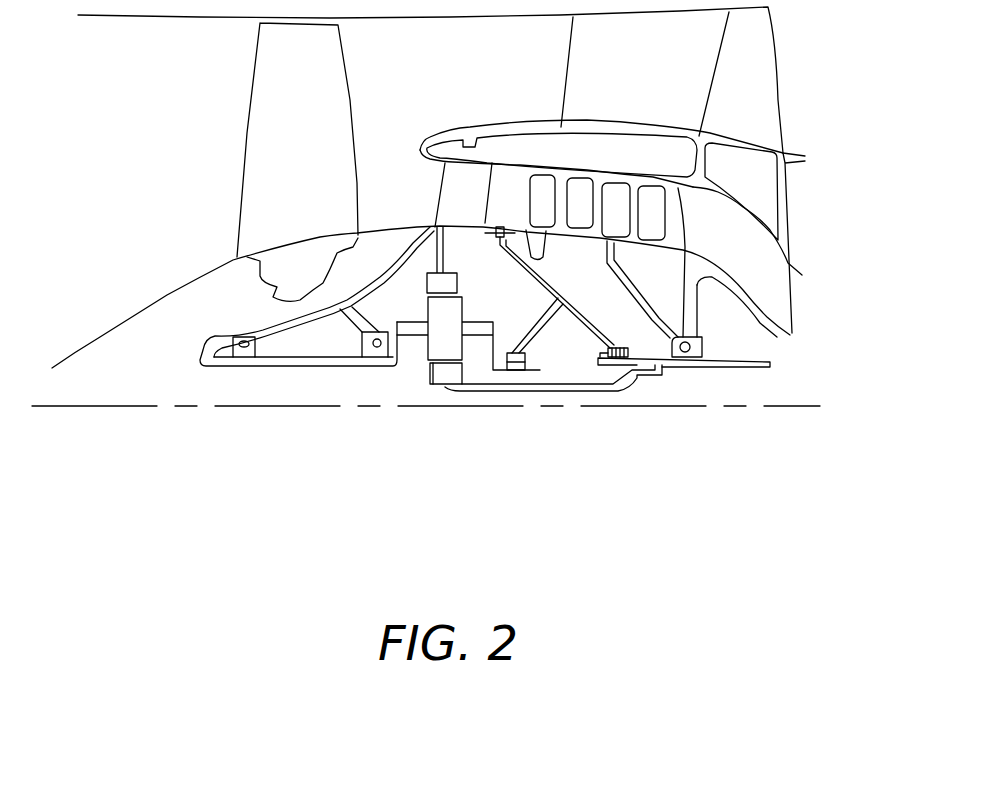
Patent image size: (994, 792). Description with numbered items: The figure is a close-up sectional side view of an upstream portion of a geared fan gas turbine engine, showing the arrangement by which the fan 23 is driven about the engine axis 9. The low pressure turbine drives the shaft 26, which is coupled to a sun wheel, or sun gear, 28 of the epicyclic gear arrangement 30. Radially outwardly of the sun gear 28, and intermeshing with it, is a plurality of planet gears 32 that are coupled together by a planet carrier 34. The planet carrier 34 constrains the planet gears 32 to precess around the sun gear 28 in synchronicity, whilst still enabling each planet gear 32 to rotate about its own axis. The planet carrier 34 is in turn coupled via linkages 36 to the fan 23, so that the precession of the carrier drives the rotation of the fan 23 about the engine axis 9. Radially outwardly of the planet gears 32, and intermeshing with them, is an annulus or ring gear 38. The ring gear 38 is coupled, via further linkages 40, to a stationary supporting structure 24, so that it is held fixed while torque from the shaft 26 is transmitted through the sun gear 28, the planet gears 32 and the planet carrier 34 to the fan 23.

The engine axis 9 is at (138, 407).
The fan 23 is at (273, 142).
The stationary supporting structure 24 is at (448, 190).
The shaft 26 is at (563, 387).
The sun gear 28 is at (445, 378).
The epicyclic gear arrangement 30 is at (412, 360).
The planet gears 32 is at (432, 352).
The planet carrier 34 is at (482, 354).
The linkages 36 is at (404, 353).
The ring gear 38 is at (457, 284).
The linkages 40 is at (445, 257).